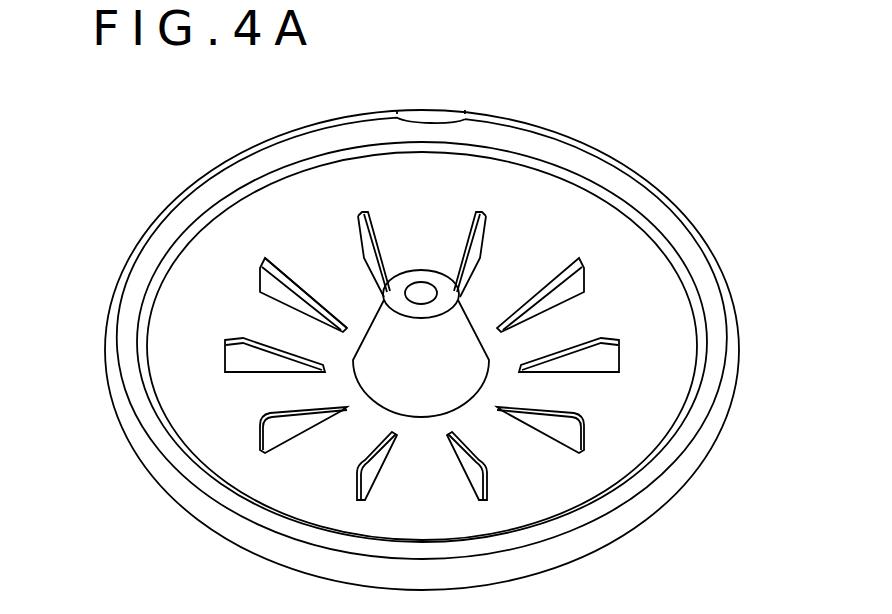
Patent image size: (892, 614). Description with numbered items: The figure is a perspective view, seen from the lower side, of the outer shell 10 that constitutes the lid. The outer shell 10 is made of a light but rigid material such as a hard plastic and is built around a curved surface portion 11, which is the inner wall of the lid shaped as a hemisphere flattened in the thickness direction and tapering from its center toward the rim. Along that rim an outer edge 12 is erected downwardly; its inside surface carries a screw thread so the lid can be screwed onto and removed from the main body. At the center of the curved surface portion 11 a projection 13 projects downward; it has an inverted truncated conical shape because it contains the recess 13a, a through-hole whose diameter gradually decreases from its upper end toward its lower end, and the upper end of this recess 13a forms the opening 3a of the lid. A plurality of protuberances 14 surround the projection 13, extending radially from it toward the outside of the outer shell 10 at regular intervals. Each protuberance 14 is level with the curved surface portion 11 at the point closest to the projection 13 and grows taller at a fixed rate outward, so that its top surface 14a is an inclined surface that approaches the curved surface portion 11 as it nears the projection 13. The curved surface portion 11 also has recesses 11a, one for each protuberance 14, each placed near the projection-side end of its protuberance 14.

The outer shell 10 is at (698, 107).
The curved surface portion 11 is at (617, 243).
The recess 11a is at (347, 408).
The outer edge 12 is at (727, 282).
The projection 13 is at (304, 237).
The recess 13a is at (478, 181).
The opening 3a is at (430, 300).
The protuberance 14 is at (217, 235).
The top surface 14a is at (285, 263).